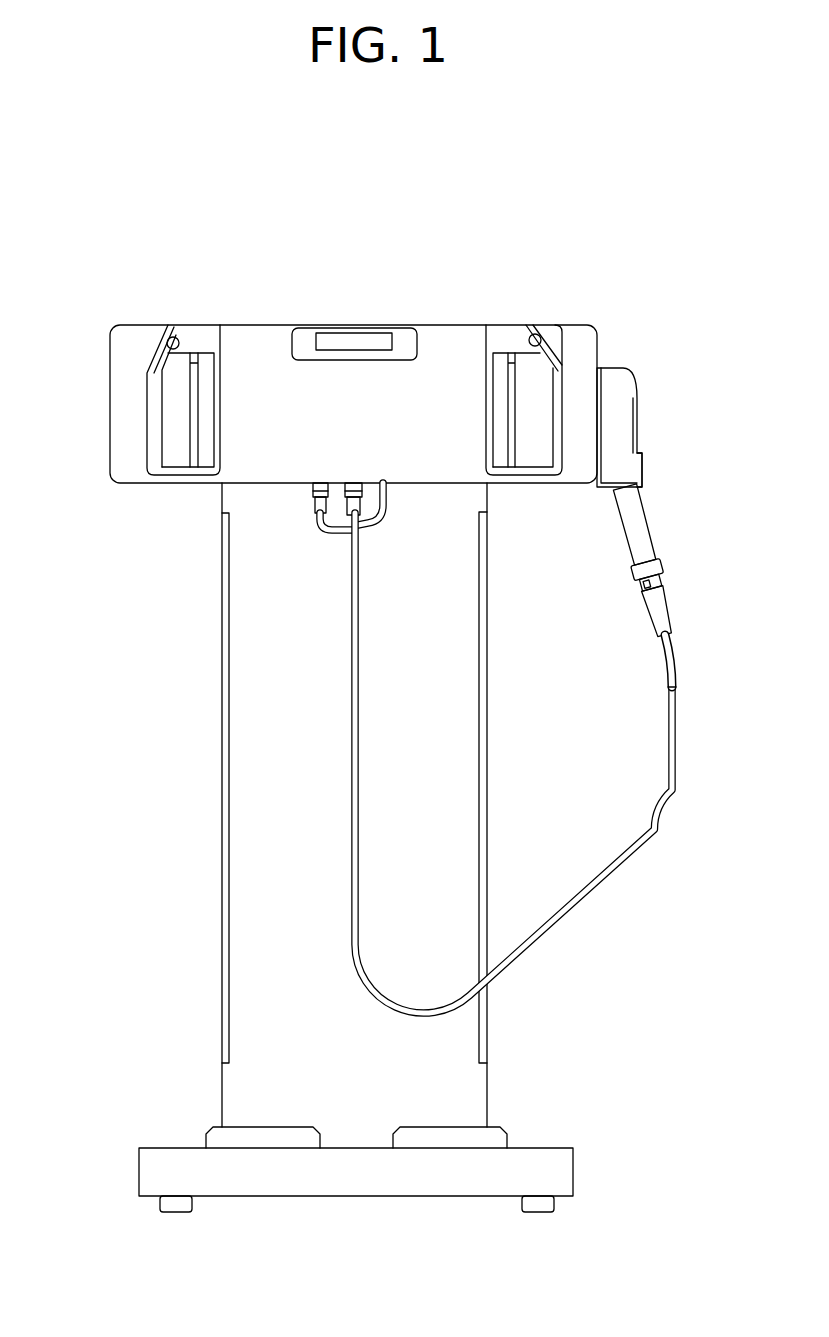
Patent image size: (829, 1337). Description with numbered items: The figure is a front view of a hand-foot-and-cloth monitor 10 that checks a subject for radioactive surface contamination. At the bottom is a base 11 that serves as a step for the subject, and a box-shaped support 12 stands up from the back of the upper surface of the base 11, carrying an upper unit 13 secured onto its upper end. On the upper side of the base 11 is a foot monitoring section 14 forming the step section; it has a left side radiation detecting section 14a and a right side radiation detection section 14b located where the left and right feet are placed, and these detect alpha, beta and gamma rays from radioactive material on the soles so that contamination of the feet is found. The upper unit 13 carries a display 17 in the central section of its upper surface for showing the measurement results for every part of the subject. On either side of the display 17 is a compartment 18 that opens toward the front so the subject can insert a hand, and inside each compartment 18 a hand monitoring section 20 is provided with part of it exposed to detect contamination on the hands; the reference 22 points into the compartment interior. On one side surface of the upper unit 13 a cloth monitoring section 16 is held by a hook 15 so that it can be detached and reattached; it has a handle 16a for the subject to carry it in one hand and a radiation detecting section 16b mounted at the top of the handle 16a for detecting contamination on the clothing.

The hand-foot-and-cloth monitor 10 is at (143, 216).
The base 11 is at (560, 1172).
The support 12 is at (248, 750).
The upper unit 13 is at (120, 312).
The foot monitoring section 14 is at (210, 1122).
The left side radiation detecting section 14a is at (280, 1147).
The right side radiation detection section 14b is at (432, 1147).
The hook 15 is at (642, 475).
The cloth monitoring section 16 is at (632, 358).
The handle 16a is at (645, 542).
The radiation detecting section 16b is at (632, 418).
The display 17 is at (360, 340).
The compartment 18 is at (173, 337).
The hand monitoring section 20 is at (197, 345).
The pocket interior 22 is at (538, 370).